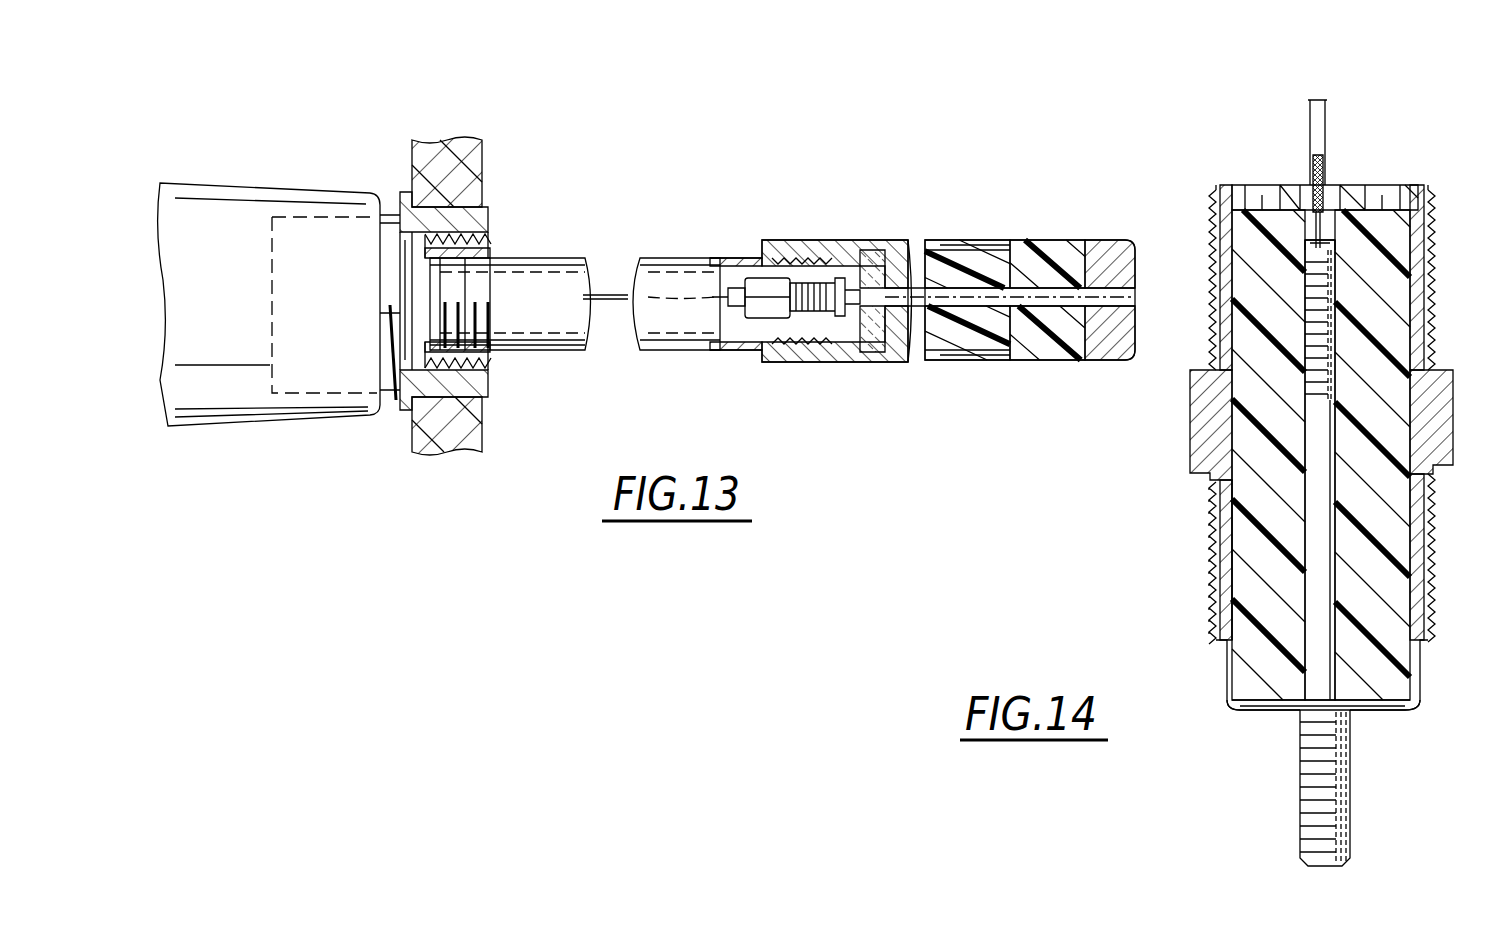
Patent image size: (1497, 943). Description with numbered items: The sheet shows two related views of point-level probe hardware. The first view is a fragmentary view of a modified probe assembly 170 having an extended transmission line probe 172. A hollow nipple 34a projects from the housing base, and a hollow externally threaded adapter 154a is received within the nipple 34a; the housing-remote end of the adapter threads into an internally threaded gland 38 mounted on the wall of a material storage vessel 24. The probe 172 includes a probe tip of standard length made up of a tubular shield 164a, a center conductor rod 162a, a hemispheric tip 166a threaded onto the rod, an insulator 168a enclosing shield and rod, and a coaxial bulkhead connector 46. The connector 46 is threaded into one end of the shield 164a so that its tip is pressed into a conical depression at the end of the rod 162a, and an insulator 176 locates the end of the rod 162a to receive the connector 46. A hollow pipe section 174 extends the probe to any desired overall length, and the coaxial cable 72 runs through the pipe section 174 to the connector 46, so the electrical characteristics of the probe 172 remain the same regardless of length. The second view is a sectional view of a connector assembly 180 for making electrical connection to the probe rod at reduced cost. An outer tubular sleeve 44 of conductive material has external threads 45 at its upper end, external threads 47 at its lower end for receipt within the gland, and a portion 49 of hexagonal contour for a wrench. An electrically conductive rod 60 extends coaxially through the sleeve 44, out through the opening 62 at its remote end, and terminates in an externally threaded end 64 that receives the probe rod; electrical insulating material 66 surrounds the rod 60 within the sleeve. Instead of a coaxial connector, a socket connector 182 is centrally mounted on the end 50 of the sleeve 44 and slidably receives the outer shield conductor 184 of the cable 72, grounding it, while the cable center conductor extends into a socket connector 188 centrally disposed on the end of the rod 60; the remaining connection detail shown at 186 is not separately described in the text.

In FIG. 13, the hollow nipple 34a is at (238, 200).
In FIG. 13, the material storage vessel 24 is at (438, 155).
In FIG. 13, the internally threaded gland 38 is at (470, 220).
In FIG. 13, the hollow externally threaded adapter 154a is at (490, 252).
In FIG. 13, the coaxial cable 72 is at (606, 302).
In FIG. 14, the coaxial cable 72 is at (1332, 118).
In FIG. 13, the hollow pipe section 174 is at (656, 258).
In FIG. 13, the coaxial bulkhead connector 46 is at (808, 276).
In FIG. 13, the insulator 176 is at (872, 252).
In FIG. 13, the extended transmission line probe 172 is at (898, 230).
In FIG. 13, the modified probe assembly 170 is at (1020, 134).
In FIG. 13, the insulator 168a is at (1037, 243).
In FIG. 13, the hemispheric tip 166a is at (1103, 245).
In FIG. 13, the tubular shield 164a is at (866, 355).
In FIG. 13, the center conductor rod 162a is at (955, 302).
In FIG. 14, the outer or shield conductor 184 is at (1330, 184).
In FIG. 14, the socket connector 182 is at (1313, 218).
In FIG. 14, the connector 186 is at (1310, 232).
In FIG. 14, the sleeve end 50 is at (1357, 195).
In FIG. 14, the socket connector 188 is at (1326, 250).
In FIG. 14, the external threads 45 is at (1222, 262).
In FIG. 14, the outer tubular sleeve 44 is at (1441, 362).
In FIG. 14, the hexagonal portion 49 is at (1190, 428).
In FIG. 14, the electrical insulating material 66 is at (1255, 484).
In FIG. 14, the connector assembly 180 is at (1138, 530).
In FIG. 14, the external threads 47 is at (1216, 556).
In FIG. 14, the electrically conductive rod 60 is at (1318, 678).
In FIG. 14, the opening 62 is at (1257, 712).
In FIG. 14, the externally threaded end 64 is at (1308, 774).